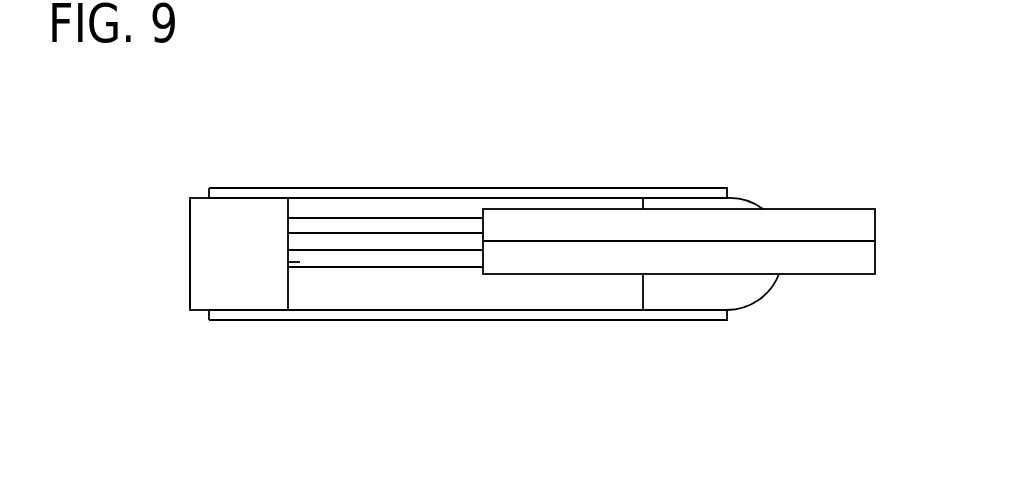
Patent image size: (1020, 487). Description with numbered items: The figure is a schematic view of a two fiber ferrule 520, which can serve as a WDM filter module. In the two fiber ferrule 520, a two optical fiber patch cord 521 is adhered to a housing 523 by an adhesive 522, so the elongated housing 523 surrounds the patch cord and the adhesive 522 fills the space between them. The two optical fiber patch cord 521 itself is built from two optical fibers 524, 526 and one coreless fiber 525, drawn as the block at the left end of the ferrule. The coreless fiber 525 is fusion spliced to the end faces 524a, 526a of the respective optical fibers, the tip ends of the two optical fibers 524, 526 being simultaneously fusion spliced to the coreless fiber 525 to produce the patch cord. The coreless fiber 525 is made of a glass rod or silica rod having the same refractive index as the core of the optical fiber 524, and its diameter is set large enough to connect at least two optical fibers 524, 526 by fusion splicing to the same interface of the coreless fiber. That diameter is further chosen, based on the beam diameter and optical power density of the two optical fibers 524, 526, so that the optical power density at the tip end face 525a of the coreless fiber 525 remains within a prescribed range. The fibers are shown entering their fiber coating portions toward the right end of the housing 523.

The two fiber ferrule 520 is at (744, 165).
The two optical fiber patch cord 521 is at (338, 295).
The adhesive 522 is at (695, 290).
The housing 523 is at (375, 197).
The optical fiber 524 is at (394, 267).
The end face of optical fiber 524a is at (288, 260).
The coreless fiber 525 is at (198, 312).
The tip end face of coreless fiber 525a is at (190, 252).
The optical fiber 526 is at (463, 220).
The end face of optical fiber 526a is at (288, 219).